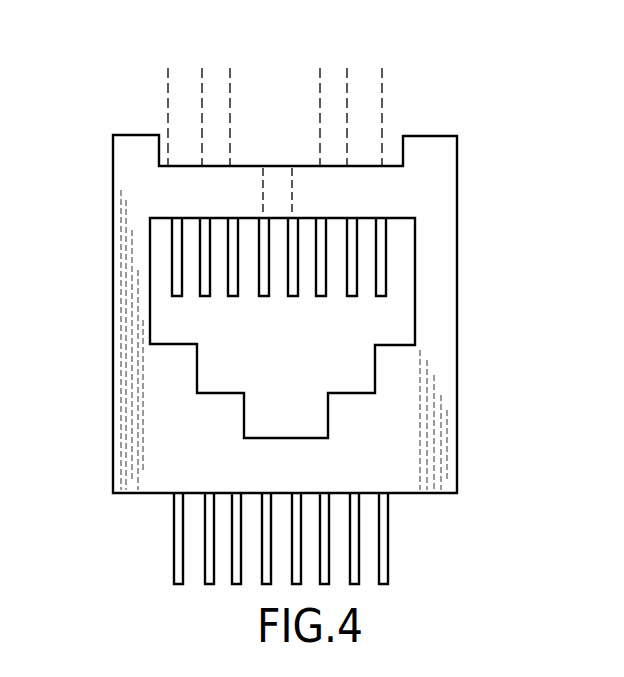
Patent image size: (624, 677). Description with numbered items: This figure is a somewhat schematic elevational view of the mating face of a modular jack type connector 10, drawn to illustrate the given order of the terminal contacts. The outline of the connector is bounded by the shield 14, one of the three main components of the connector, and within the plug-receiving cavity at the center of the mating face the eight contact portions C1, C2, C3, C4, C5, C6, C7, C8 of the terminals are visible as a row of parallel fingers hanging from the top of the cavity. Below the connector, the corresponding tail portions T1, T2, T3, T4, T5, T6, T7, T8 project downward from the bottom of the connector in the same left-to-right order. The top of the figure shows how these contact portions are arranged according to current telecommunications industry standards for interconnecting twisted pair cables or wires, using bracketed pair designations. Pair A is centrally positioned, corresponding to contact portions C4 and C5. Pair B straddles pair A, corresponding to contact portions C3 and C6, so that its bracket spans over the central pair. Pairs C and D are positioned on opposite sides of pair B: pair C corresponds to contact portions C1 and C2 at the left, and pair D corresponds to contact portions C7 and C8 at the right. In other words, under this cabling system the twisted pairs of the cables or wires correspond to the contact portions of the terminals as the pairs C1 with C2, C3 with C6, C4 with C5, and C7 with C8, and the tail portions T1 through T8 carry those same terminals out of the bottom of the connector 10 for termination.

The modular jack type connector 10 is at (473, 122).
The shield 14 is at (455, 187).
The contact portion C1 is at (176, 236).
The contact portion C2 is at (207, 259).
The contact portion C3 is at (234, 272).
The contact portion C4 is at (262, 288).
The contact portion C5 is at (300, 272).
The contact portion C6 is at (328, 242).
The contact portion C7 is at (358, 284).
The contact portion C8 is at (386, 274).
The tail portion T1 is at (174, 507).
The tail portion T2 is at (207, 533).
The tail portion T3 is at (237, 545).
The tail portion T4 is at (268, 555).
The tail portion T5 is at (297, 525).
The tail portion T6 is at (325, 540).
The tail portion T7 is at (355, 560).
The tail portion T8 is at (386, 577).
The pair A is at (292, 160).
The pair B is at (320, 66).
The pair C is at (202, 66).
The pair D is at (382, 66).